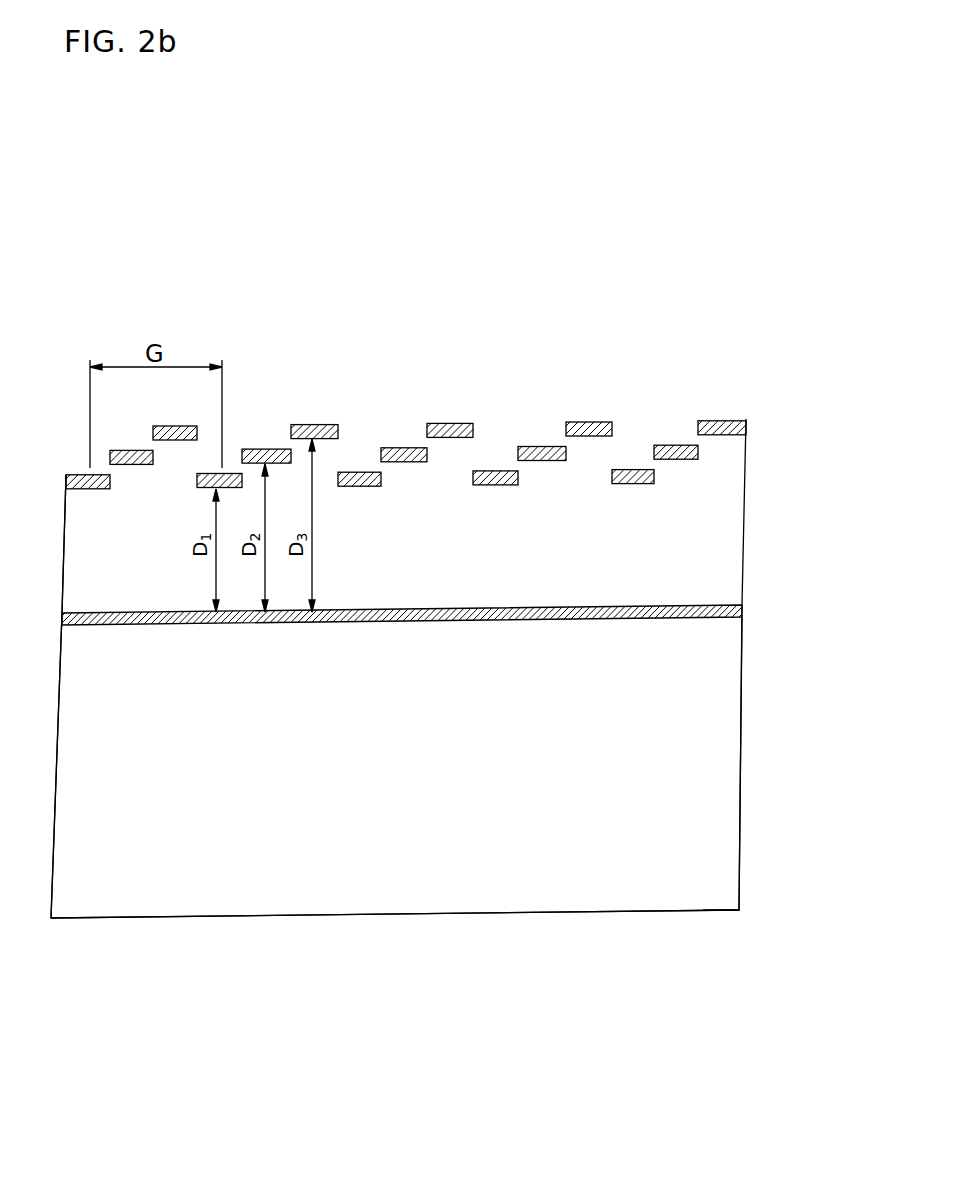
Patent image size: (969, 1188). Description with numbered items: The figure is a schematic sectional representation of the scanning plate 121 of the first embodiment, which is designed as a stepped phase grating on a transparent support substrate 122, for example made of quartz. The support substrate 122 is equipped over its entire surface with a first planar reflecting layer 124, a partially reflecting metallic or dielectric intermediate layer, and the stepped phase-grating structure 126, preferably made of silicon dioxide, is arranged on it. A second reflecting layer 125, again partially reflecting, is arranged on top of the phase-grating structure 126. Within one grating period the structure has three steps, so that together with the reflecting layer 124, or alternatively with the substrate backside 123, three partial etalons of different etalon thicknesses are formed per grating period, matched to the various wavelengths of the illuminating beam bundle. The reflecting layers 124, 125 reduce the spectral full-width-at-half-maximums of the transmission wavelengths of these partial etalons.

The scanning plate 121 is at (111, 928).
The support substrate 122 is at (720, 752).
The substrate backside 123 is at (703, 912).
The first reflecting layer 124 is at (742, 607).
The second reflecting layer 125 is at (746, 418).
The phase-grating structure 126 is at (82, 577).